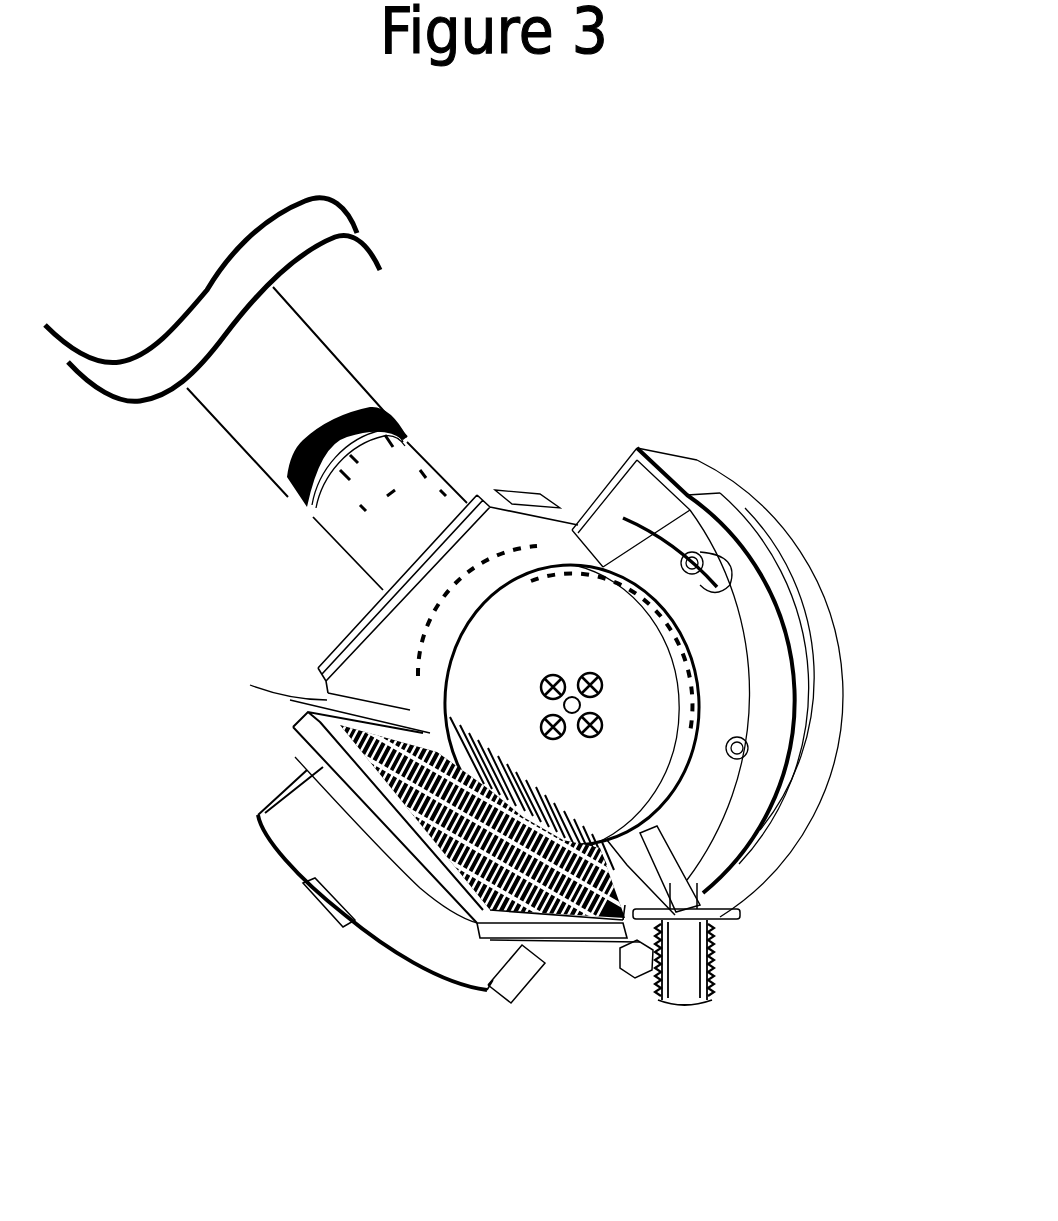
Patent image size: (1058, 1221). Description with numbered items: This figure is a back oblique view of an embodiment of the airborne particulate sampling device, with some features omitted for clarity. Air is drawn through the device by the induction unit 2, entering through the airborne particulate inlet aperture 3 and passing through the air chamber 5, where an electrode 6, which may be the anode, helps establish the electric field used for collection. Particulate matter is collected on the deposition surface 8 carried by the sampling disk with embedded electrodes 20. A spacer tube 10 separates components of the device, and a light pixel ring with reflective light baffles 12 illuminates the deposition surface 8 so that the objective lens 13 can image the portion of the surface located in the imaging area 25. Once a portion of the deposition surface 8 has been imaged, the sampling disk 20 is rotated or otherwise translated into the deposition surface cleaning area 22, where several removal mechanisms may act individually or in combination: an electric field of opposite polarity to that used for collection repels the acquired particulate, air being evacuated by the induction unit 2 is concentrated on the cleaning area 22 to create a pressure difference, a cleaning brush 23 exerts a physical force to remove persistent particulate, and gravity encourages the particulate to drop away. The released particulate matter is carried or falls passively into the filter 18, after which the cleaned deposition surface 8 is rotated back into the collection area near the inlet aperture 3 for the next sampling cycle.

The induction unit 2 is at (388, 928).
The airborne particulate inlet aperture 3 is at (693, 983).
The air chamber 5 is at (730, 837).
The electrode 6 is at (733, 797).
The deposition surface 8 is at (705, 710).
The spacer tube 10 is at (307, 387).
The light pixel ring with reflective light baffles 12 is at (533, 537).
The objective lens 13 is at (418, 520).
The filter 18 is at (573, 938).
The sampling disk with embedded electrodes 20 is at (675, 625).
The deposition surface cleaning area 22 is at (477, 770).
The cleaning brush 23 is at (455, 808).
The imaging area 25 is at (475, 610).